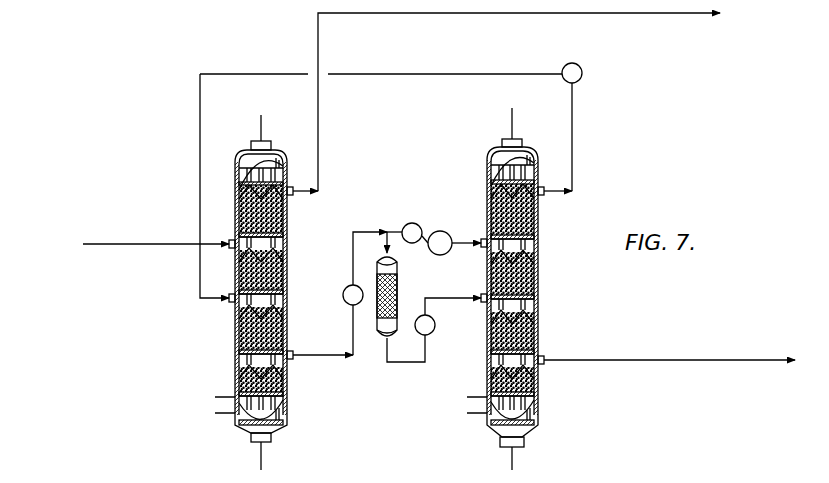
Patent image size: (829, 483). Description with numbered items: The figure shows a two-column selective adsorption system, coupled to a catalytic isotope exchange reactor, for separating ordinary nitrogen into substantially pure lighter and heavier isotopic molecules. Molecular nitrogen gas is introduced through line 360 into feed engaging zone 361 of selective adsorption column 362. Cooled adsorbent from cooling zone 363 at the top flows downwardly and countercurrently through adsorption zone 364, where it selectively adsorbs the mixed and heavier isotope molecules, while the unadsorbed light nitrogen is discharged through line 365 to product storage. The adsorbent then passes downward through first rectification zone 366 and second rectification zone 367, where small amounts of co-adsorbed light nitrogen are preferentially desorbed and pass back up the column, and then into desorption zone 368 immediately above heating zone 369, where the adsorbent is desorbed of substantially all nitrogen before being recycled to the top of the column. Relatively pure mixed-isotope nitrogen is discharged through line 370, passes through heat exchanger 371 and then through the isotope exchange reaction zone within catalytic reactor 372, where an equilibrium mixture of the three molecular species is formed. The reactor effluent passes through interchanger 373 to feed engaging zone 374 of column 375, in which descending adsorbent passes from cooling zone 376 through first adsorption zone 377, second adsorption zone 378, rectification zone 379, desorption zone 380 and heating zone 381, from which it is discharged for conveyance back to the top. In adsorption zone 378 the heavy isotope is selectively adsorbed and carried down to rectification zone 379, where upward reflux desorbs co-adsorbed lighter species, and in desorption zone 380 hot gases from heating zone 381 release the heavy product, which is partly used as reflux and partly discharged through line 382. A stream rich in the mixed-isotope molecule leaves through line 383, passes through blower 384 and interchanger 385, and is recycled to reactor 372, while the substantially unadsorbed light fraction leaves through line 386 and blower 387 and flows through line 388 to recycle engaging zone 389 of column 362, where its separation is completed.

The line 360 is at (118, 252).
The feed engaging zone 361 is at (278, 240).
The selective adsorption column 362 is at (243, 158).
The cooling zone 363 is at (258, 186).
The adsorption zone 364 is at (262, 216).
The line 365 is at (319, 160).
The first rectification zone 366 is at (258, 274).
The second rectification zone 367 is at (284, 304).
The desorption zone 368 is at (246, 368).
The heating zone 369 is at (244, 412).
The line 370 is at (312, 358).
The heat exchanger 371 is at (344, 306).
The catalytic reactor 372 is at (396, 287).
The interchanger 373 is at (435, 332).
The feed engaging zone 374 is at (528, 304).
The column 375 is at (498, 142).
The cooling zone 376 is at (515, 172).
The first adsorption zone 377 is at (512, 218).
The second adsorption zone 378 is at (508, 272).
The rectification zone 379 is at (512, 328).
The desorption zone 380 is at (528, 381).
The heating zone 381 is at (495, 418).
The line 382 is at (688, 338).
The line 383 is at (452, 258).
The blower 384 is at (432, 232).
The interchanger 385 is at (404, 226).
The line 386 is at (574, 165).
The blower 387 is at (582, 72).
The line 388 is at (470, 74).
The recycle engaging zone 389 is at (230, 306).